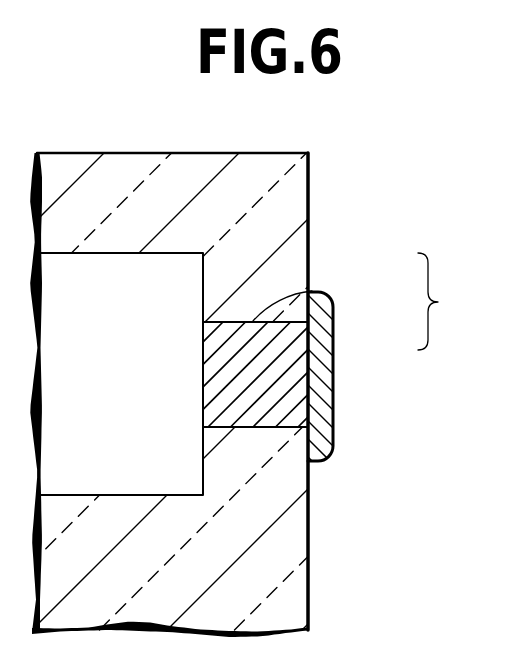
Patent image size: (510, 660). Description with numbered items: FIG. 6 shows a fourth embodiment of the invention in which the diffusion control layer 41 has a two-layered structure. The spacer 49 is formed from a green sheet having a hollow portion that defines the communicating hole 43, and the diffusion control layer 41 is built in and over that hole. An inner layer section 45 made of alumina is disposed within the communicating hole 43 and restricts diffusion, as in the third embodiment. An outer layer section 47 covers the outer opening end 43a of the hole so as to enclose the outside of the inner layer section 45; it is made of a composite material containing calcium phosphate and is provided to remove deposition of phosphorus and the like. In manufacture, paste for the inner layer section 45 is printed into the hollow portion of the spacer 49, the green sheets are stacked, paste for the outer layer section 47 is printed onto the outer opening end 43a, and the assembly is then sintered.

The spacer 49 is at (308, 178).
The communicating hole 43 is at (301, 373).
The outer opening end 43a is at (298, 426).
The diffusion control layer 41 is at (451, 301).
The inner layer section 45 is at (312, 291).
The outer layer section 47 is at (323, 341).